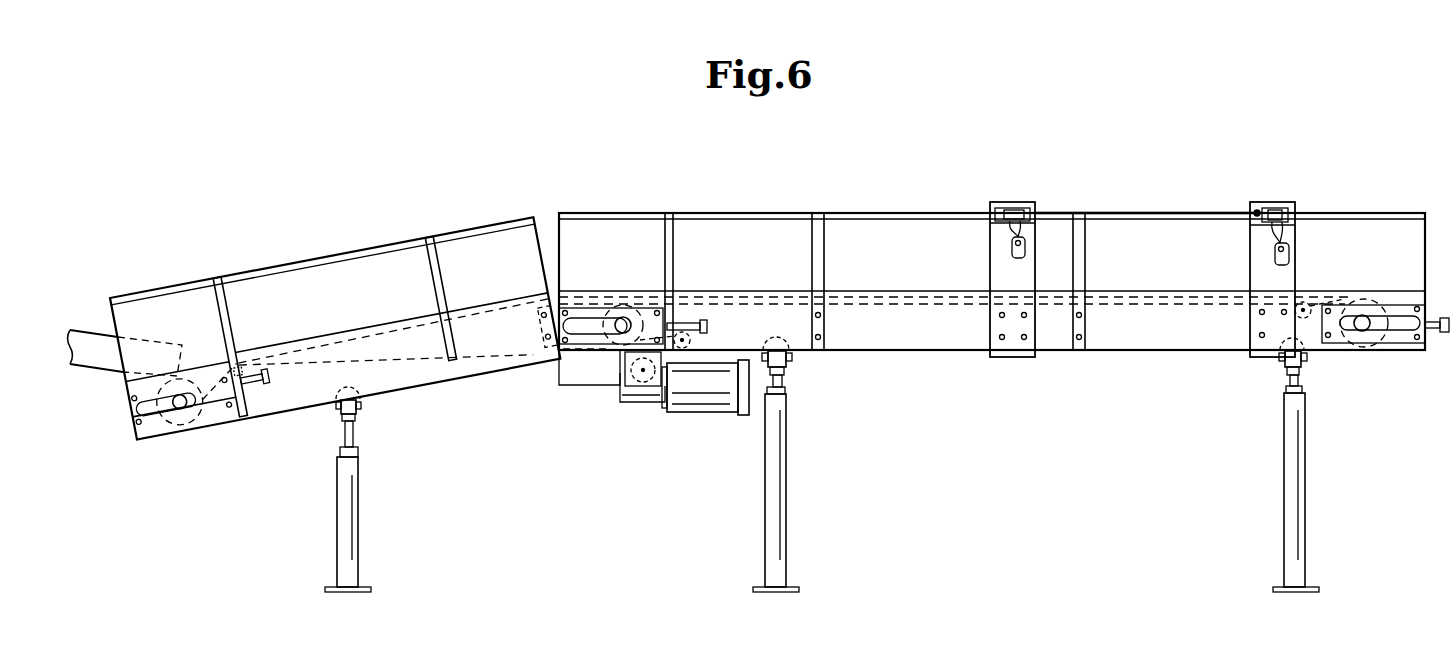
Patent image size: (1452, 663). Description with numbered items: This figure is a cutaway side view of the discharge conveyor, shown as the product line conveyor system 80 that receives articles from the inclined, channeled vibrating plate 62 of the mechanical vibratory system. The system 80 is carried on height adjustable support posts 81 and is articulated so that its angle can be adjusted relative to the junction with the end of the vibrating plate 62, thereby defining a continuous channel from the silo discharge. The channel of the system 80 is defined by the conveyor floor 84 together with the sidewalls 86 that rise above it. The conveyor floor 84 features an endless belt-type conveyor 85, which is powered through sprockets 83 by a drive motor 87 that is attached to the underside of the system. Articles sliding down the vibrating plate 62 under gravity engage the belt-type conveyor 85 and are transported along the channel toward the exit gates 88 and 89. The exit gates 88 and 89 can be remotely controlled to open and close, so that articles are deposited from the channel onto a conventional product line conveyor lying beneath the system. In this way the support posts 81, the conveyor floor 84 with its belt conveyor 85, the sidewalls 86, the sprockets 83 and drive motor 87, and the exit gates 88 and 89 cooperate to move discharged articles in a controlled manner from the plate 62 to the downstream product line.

The vibrating plate 62 is at (95, 331).
The product line conveyor system 80 is at (947, 373).
The height adjustable support posts 81 is at (354, 537).
The sprockets 83 is at (180, 427).
The conveyor floor 84 is at (410, 330).
The endless belt-type conveyor 85 is at (393, 363).
The sidewalls 86 is at (763, 256).
The drive motor 87 is at (704, 401).
The exit gate 88 is at (924, 257).
The exit gate 89 is at (1194, 262).